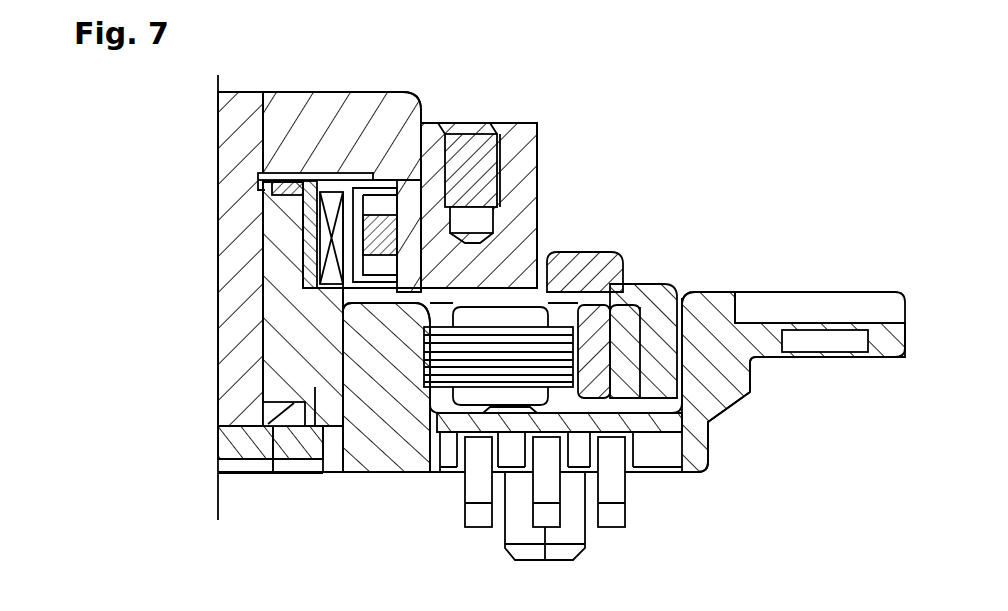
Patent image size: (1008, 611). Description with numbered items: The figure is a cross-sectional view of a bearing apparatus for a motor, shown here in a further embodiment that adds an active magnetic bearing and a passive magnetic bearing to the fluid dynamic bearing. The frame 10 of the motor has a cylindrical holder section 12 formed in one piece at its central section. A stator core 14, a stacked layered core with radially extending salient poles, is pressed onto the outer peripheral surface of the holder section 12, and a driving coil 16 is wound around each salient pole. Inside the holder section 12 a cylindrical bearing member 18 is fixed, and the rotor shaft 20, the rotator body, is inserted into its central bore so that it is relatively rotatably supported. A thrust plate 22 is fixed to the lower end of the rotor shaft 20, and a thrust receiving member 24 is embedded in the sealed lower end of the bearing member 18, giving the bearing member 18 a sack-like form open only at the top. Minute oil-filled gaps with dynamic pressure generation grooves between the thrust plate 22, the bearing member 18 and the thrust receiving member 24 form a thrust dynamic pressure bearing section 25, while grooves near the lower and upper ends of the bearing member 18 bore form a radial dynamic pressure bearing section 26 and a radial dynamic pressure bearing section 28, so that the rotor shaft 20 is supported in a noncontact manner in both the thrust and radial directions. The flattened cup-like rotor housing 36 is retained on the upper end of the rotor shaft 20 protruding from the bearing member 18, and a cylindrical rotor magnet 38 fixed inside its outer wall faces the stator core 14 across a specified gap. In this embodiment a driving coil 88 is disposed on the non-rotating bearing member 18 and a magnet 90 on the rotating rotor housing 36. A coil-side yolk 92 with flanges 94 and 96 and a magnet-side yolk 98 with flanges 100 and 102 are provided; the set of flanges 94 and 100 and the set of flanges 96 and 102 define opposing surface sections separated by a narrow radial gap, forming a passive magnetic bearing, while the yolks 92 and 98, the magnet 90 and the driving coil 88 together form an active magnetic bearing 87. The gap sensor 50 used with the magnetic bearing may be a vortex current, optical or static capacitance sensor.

The frame 10 is at (707, 445).
The cylindrical holder section 12 is at (383, 342).
The stator core 14 is at (560, 325).
The driving coil 16 is at (510, 318).
The bearing member 18 is at (315, 390).
The rotor shaft 20 is at (250, 374).
The thrust plate 22 is at (262, 409).
The thrust receiving member 24 is at (218, 458).
The thrust dynamic pressure bearing section 25 is at (272, 473).
The radial dynamic pressure bearing section 26 is at (245, 379).
The radial dynamic pressure bearing section 28 is at (250, 261).
The rotor housing 36 is at (533, 184).
The rotor magnet 38 is at (620, 290).
The gap sensor 50 is at (303, 173).
The active magnetic bearing 87 is at (292, 239).
The driving coil 88 is at (372, 185).
The magnet 90 is at (493, 127).
The coil-side yolk 92 is at (300, 200).
The flange 94 is at (345, 292).
The flange 96 is at (330, 180).
The magnet-side yolk 98 is at (537, 140).
The flange 100 is at (417, 303).
The flange 102 is at (421, 125).